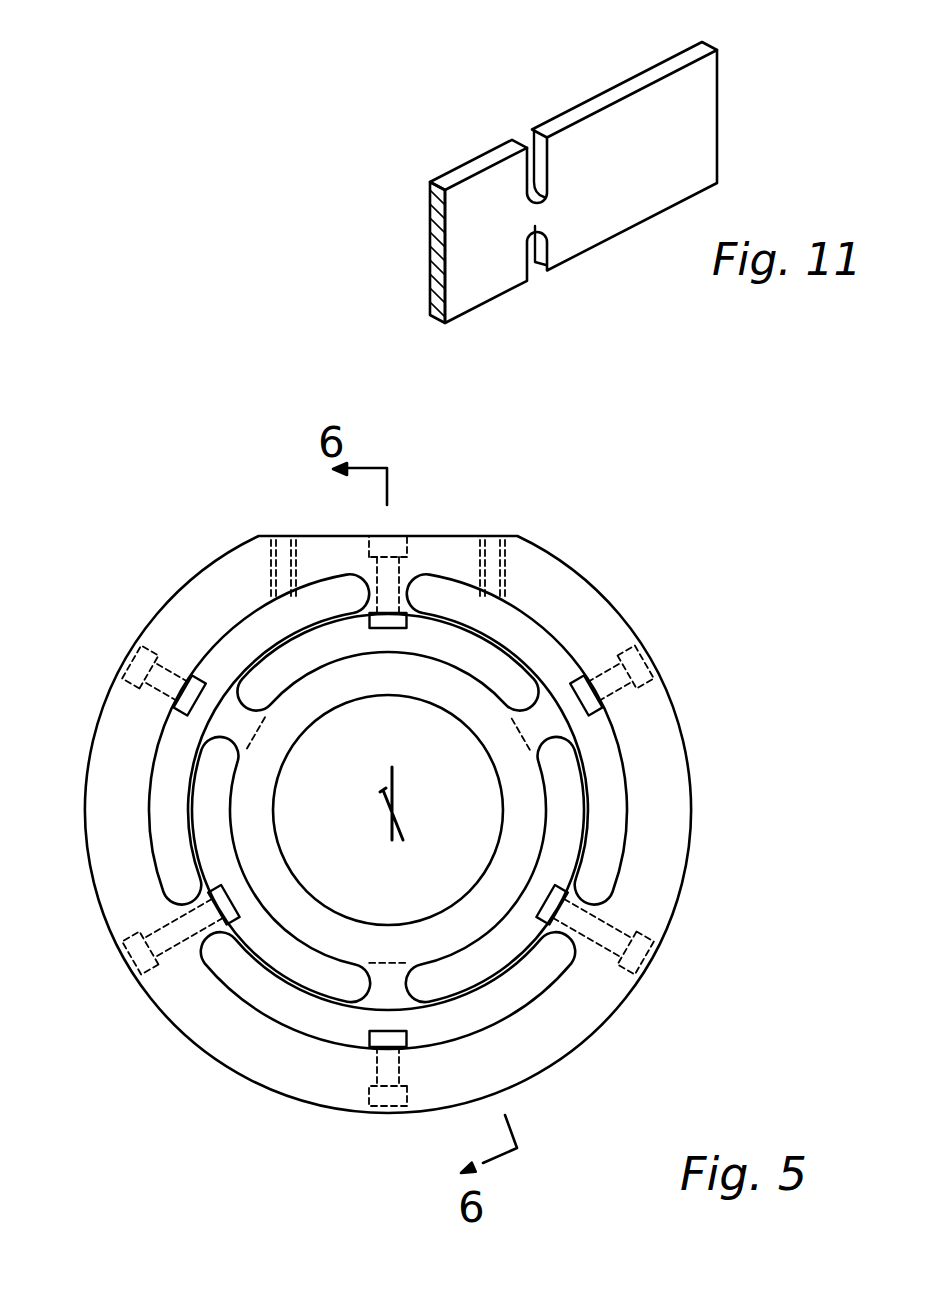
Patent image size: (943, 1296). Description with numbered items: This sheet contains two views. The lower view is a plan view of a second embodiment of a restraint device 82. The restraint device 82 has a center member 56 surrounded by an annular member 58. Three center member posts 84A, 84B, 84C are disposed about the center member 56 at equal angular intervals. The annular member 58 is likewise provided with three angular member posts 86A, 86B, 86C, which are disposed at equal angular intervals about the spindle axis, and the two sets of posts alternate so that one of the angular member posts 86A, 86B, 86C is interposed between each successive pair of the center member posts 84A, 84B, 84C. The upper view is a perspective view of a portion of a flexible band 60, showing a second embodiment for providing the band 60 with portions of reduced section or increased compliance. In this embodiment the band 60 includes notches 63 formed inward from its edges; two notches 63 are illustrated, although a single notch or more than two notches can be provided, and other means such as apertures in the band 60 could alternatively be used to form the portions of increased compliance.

In FIG. 5, the center member 56 is at (303, 932).
In FIG. 5, the annular member 58 is at (674, 708).
In FIG. 11, the band 60 is at (632, 101).
In FIG. 5, the band 60 is at (363, 978).
In FIG. 11, the notches 63 is at (526, 133).
In FIG. 5, the restraint device 82 is at (384, 829).
In FIG. 5, the center member post 84A is at (523, 693).
In FIG. 5, the center member post 84B is at (358, 993).
In FIG. 5, the center member post 84C is at (253, 693).
In FIG. 5, the angular member post 86A is at (416, 588).
In FIG. 5, the angular member post 86B is at (590, 897).
In FIG. 5, the angular member post 86C is at (180, 895).